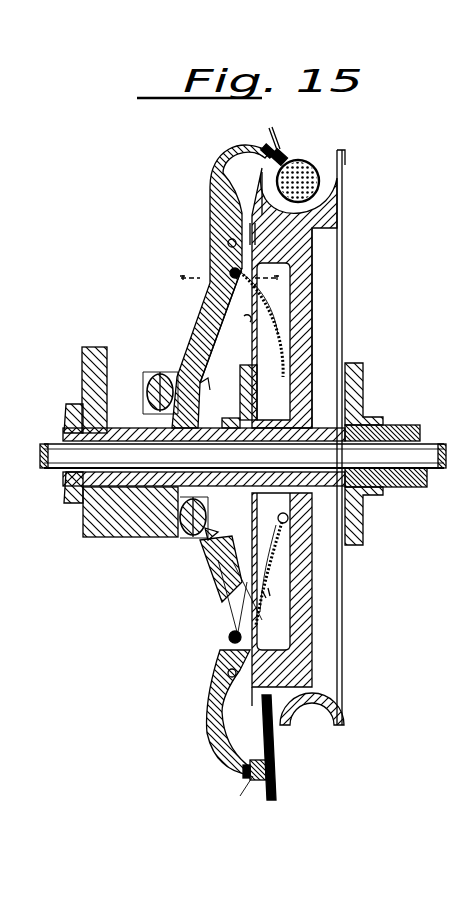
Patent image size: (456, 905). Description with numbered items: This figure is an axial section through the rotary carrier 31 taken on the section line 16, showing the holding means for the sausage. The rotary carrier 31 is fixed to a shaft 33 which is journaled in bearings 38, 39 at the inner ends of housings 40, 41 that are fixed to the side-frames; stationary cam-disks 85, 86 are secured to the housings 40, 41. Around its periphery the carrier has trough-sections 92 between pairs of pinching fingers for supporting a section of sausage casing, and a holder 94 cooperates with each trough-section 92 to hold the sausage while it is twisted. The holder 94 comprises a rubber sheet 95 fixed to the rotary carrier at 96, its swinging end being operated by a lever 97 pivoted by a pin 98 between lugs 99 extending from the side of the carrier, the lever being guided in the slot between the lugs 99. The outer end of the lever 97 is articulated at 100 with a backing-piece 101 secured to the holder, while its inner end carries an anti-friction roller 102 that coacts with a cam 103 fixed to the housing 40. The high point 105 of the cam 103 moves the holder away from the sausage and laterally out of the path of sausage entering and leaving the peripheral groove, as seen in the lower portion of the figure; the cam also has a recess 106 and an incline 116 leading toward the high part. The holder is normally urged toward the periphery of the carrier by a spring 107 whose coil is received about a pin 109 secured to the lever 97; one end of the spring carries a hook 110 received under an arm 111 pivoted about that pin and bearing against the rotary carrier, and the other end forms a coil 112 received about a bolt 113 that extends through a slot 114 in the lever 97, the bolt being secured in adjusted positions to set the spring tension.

The section line 16— 16 is at (230, 293).
The rotary carrier 31 is at (303, 250).
The shaft 33 is at (431, 442).
The bearing 38 is at (235, 427).
The bearing 39 is at (370, 428).
The housing 40 is at (70, 494).
The housing 41 is at (408, 488).
The cam-disk 85 is at (242, 377).
The cam-disk 86 is at (366, 378).
The peripheral trough-section 92 is at (326, 167).
The holder 94 is at (295, 144).
The rubber sheet 95 is at (313, 157).
The fixing point of rubber sheet 96 is at (318, 230).
The lever 97 is at (213, 208).
The pin 98 is at (227, 243).
The lugs 99 is at (250, 225).
The articulation 100 is at (265, 145).
The backing-piece 101 is at (253, 459).
The anti-friction roller 102 is at (158, 400).
The cam 103 is at (86, 365).
The high point of cam 105 is at (162, 536).
The recess of cam 106 is at (160, 367).
The spring 107 is at (282, 330).
The pin 109 is at (229, 272).
The hook 110 is at (280, 526).
The arm 111 is at (249, 321).
The coil 112 is at (212, 566).
The bolt 113 is at (196, 336).
The slot 114 is at (207, 379).
The incline 116 is at (150, 373).